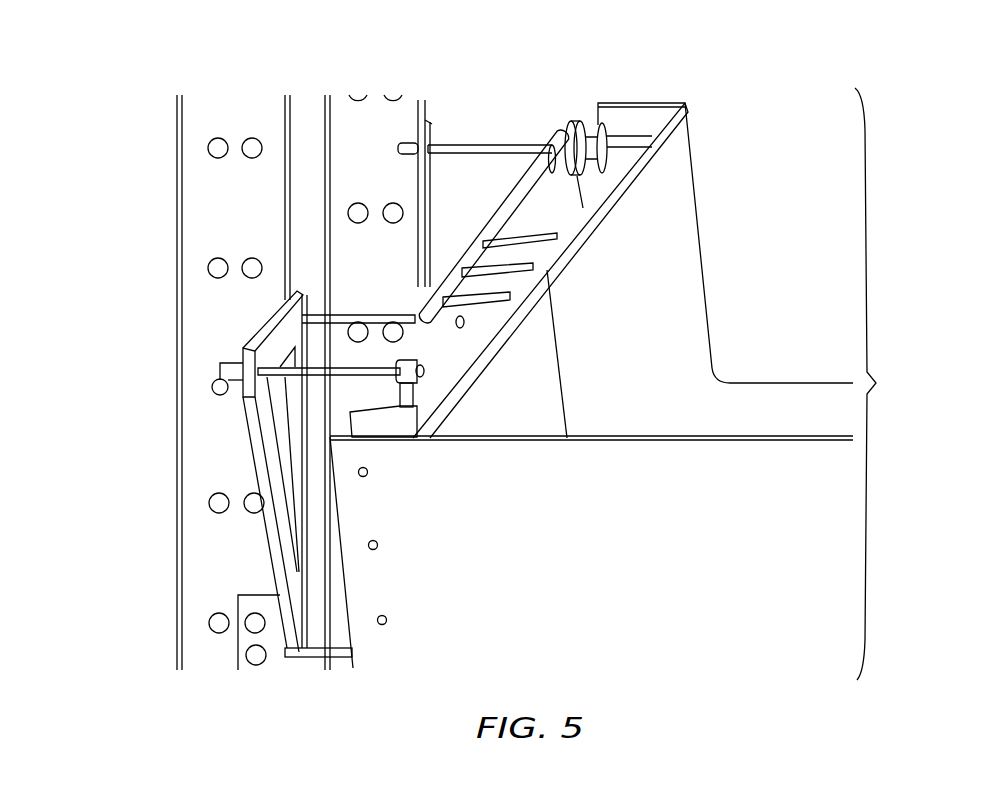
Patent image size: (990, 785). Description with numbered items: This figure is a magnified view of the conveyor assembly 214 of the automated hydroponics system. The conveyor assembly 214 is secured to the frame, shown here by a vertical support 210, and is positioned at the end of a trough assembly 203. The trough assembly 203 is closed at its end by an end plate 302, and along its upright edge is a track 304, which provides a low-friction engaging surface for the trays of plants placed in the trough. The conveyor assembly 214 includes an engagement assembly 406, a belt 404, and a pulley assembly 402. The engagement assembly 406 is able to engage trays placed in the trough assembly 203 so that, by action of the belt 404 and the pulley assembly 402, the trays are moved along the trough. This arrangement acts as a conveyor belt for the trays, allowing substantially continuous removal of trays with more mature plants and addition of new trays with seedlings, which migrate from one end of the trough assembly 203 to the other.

The vertical support 210 is at (195, 149).
The conveyor assembly 214 is at (242, 340).
The pulley assembly 402 is at (472, 145).
The belt 404 is at (474, 236).
The engagement assembly 406 is at (440, 357).
The track 304 is at (700, 270).
The end plate 302 is at (591, 552).
The trough assembly 203 is at (918, 384).